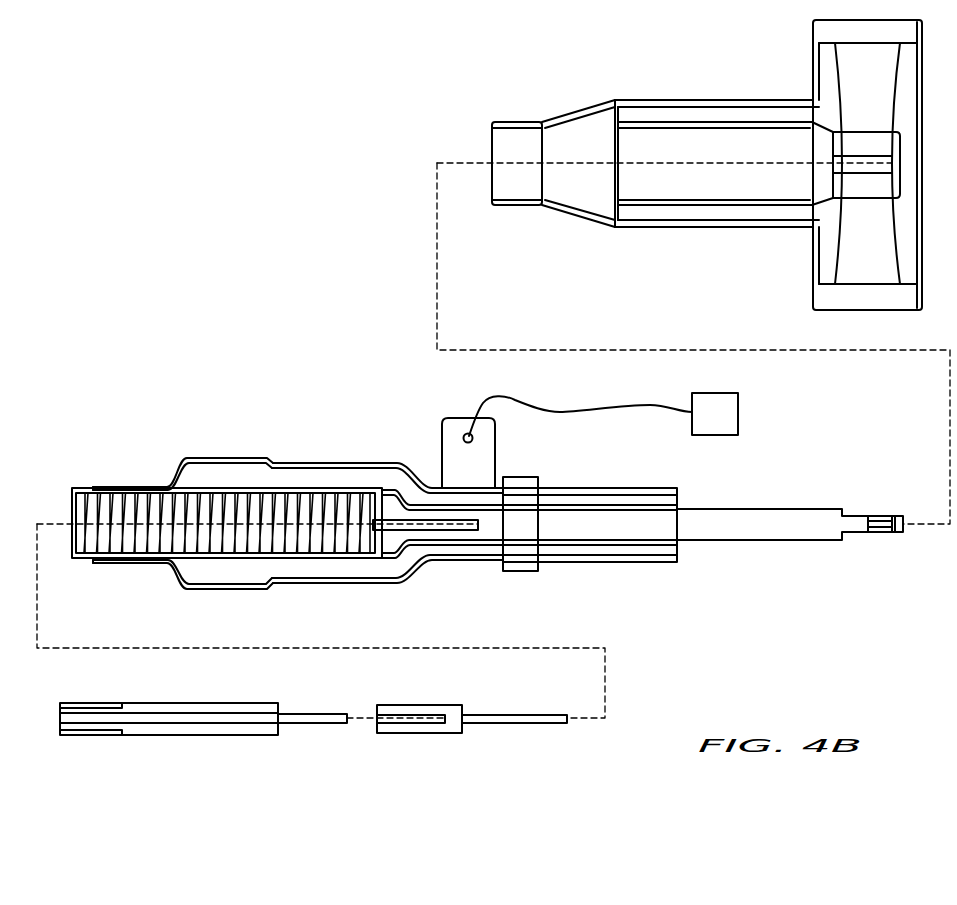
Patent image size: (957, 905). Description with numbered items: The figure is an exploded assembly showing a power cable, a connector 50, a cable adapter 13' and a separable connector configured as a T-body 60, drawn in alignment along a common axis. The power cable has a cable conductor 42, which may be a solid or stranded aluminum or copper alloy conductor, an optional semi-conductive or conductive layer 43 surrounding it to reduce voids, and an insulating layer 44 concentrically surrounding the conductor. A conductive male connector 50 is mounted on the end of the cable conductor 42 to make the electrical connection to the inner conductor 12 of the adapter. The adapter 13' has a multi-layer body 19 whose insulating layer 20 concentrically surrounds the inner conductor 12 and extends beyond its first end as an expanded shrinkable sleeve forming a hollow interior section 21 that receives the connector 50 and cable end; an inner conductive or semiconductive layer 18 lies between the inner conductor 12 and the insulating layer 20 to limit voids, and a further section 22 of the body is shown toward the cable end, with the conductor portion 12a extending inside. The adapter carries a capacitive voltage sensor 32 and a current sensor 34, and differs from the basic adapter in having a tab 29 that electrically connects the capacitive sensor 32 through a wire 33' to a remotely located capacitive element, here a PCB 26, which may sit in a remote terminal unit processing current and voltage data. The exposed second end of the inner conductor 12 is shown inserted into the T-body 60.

The T-body 60 is at (676, 66).
The cable adapter 13' is at (465, 503).
The hollow interior section 21 is at (82, 507).
The multi-layer body 19 is at (278, 453).
The housing distal section 22 is at (283, 584).
The insulating layer 20 is at (325, 574).
The inner conductive or semiconductive layer 18 is at (370, 565).
The shaft distal portion 12a is at (465, 537).
The capacitive voltage sensor 32 is at (477, 487).
The current sensor 34 is at (528, 525).
The inner conductor 12 is at (793, 543).
The tab 29 is at (455, 417).
The wire 33' is at (580, 406).
The PCB 26 is at (735, 403).
The insulating layer 44 is at (212, 730).
The semi-conductive or conductive layer 43 is at (253, 725).
The cable conductor 42 is at (317, 712).
The conductive male connector 50 is at (456, 690).